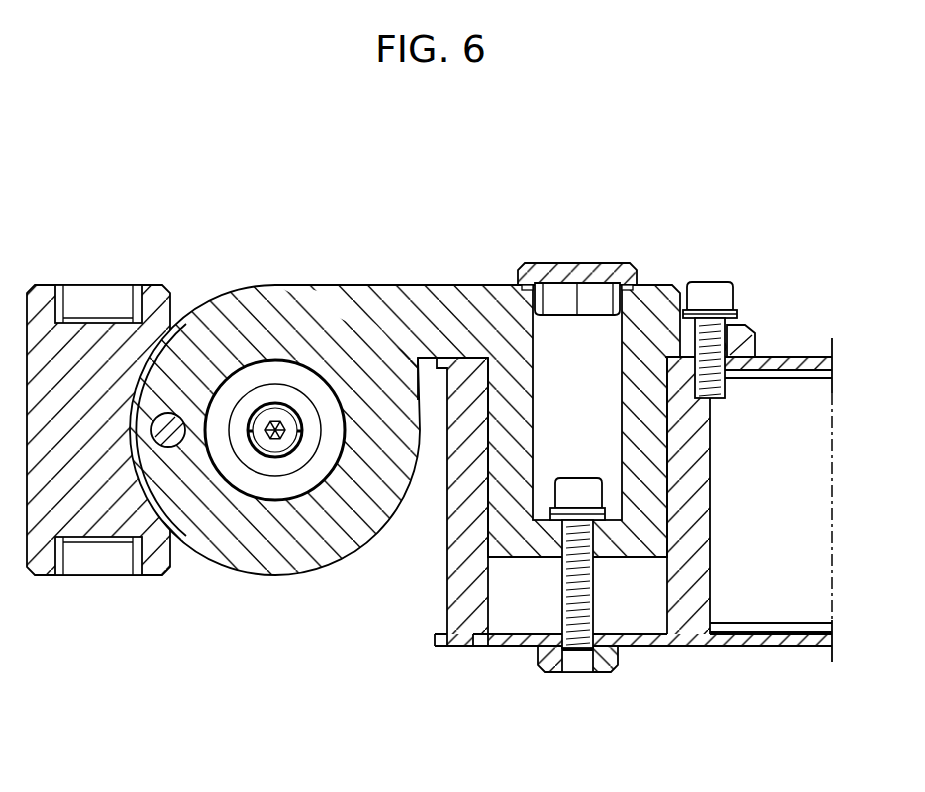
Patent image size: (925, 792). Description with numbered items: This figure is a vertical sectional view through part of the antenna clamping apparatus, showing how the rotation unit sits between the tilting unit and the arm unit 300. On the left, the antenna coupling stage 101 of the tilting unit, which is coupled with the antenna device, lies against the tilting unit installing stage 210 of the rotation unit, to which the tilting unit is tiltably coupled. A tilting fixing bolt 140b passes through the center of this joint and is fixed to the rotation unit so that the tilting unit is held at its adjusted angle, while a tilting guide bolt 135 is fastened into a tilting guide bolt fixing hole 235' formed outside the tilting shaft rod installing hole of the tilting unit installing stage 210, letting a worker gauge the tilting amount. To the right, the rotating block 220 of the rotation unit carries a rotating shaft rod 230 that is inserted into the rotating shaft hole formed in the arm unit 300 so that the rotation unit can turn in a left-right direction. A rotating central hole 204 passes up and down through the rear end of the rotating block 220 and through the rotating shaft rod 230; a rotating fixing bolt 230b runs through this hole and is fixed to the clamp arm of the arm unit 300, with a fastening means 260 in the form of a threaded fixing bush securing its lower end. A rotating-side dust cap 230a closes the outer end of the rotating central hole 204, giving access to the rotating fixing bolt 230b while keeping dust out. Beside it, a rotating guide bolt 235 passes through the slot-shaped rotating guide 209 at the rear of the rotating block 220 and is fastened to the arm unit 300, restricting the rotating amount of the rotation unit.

The antenna coupling stage 101 is at (93, 512).
The tilting guide bolt 135 is at (172, 428).
The tilting guide bolt fixing hole 235' is at (191, 329).
The tilting fixing bolt 140b is at (281, 420).
The tilting unit installing stage 210 is at (305, 558).
The rotating block 220 is at (462, 305).
The rotating shaft rod 230 is at (510, 532).
The rotating-side dust cap 230a is at (583, 265).
The rotating central hole 204 is at (583, 375).
The rotating guide 209 is at (726, 340).
The rotating guide bolt 235 is at (730, 303).
The rotating fixing bolt 230b is at (610, 670).
The fastening means 260 is at (547, 668).
The arm unit 300 is at (764, 646).